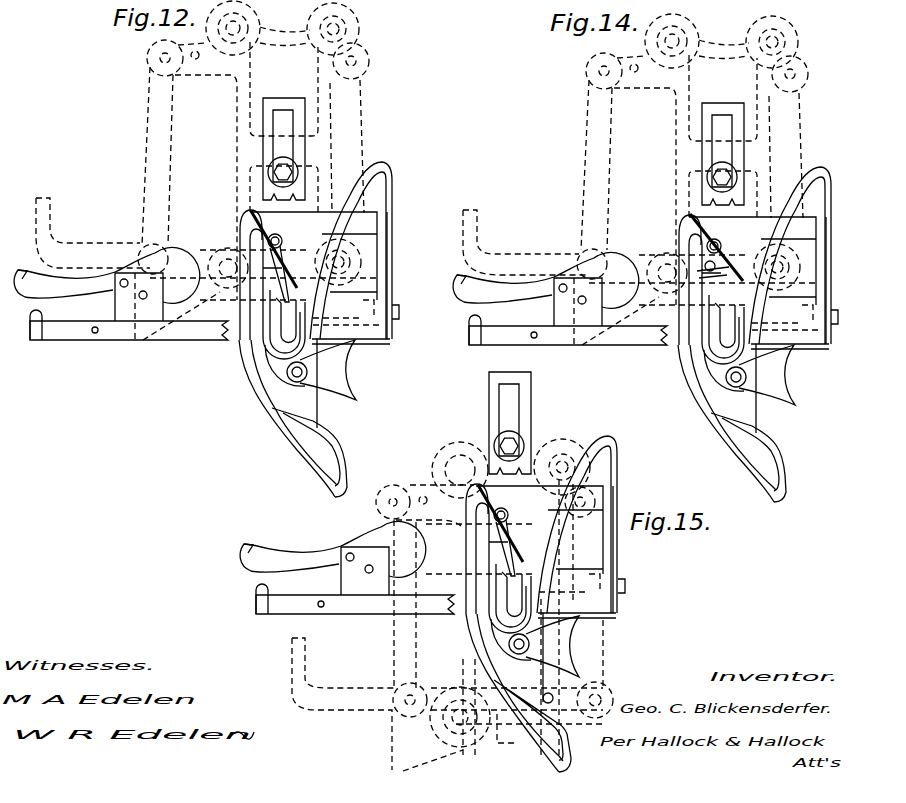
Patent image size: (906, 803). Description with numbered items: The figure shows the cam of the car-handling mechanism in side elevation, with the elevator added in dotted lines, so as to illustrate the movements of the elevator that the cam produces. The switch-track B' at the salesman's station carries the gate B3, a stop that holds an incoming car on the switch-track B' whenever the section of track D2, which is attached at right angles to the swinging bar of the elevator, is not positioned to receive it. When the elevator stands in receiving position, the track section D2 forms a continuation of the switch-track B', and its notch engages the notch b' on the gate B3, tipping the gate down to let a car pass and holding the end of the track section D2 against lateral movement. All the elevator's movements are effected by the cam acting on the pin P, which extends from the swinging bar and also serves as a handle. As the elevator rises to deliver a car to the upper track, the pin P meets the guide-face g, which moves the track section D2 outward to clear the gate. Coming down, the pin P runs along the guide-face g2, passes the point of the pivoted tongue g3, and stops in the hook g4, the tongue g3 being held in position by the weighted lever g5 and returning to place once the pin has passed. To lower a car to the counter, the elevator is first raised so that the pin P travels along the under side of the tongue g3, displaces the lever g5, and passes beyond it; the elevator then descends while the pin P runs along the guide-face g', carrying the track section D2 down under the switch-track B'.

In FIG. 12, the switch-track B' is at (116, 325).
In FIG. 14, the switch-track B' is at (551, 330).
In FIG. 15, the switch-track B' is at (342, 599).
In FIG. 12, the gate B3 is at (107, 275).
In FIG. 14, the gate B3 is at (546, 280).
In FIG. 15, the gate B3 is at (333, 549).
In FIG. 12, the notch on the gate b' is at (38, 265).
In FIG. 14, the notch on the gate b' is at (450, 280).
In FIG. 15, the notch on the gate b' is at (268, 540).
In FIG. 12, the section of track D2 is at (44, 216).
In FIG. 14, the section of track D2 is at (526, 242).
In FIG. 15, the section of track D2 is at (343, 704).
In FIG. 12, the pin P is at (293, 250).
In FIG. 14, the pin P is at (709, 288).
In FIG. 15, the pin P is at (539, 603).
In FIG. 12, the guide-face g is at (272, 353).
In FIG. 14, the guide-face g is at (715, 358).
In FIG. 15, the guide-face g is at (514, 628).
In FIG. 12, the guide-face g' is at (320, 441).
In FIG. 14, the guide-face g' is at (754, 444).
In FIG. 15, the guide-face g' is at (549, 715).
In FIG. 12, the guide-face g2 is at (369, 176).
In FIG. 14, the guide-face g2 is at (791, 242).
In FIG. 15, the guide-face g2 is at (577, 513).
In FIG. 12, the pivoted tongue g3 is at (286, 237).
In FIG. 14, the pivoted tongue g3 is at (721, 247).
In FIG. 15, the pivoted tongue g3 is at (509, 523).
In FIG. 12, the hook g4 is at (290, 331).
In FIG. 14, the hook g4 is at (724, 332).
In FIG. 15, the hook g4 is at (525, 601).
In FIG. 12, the weighted lever g5 is at (347, 372).
In FIG. 14, the weighted lever g5 is at (753, 358).
In FIG. 15, the weighted lever g5 is at (535, 629).